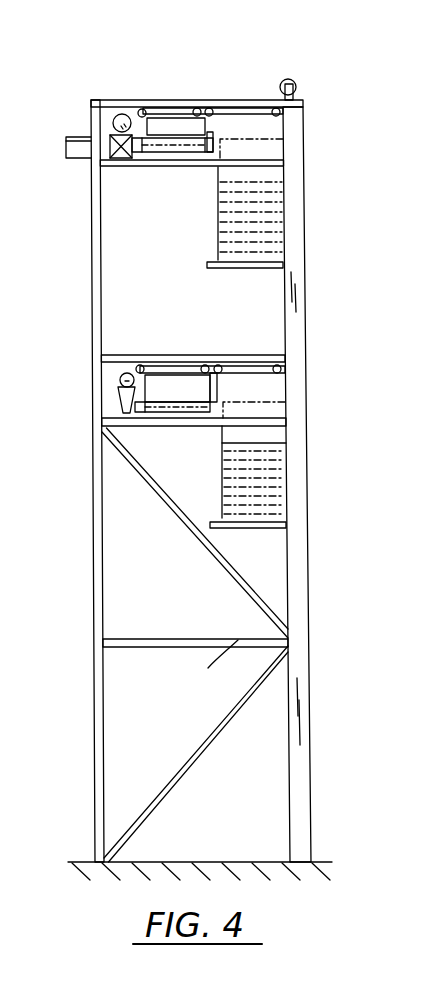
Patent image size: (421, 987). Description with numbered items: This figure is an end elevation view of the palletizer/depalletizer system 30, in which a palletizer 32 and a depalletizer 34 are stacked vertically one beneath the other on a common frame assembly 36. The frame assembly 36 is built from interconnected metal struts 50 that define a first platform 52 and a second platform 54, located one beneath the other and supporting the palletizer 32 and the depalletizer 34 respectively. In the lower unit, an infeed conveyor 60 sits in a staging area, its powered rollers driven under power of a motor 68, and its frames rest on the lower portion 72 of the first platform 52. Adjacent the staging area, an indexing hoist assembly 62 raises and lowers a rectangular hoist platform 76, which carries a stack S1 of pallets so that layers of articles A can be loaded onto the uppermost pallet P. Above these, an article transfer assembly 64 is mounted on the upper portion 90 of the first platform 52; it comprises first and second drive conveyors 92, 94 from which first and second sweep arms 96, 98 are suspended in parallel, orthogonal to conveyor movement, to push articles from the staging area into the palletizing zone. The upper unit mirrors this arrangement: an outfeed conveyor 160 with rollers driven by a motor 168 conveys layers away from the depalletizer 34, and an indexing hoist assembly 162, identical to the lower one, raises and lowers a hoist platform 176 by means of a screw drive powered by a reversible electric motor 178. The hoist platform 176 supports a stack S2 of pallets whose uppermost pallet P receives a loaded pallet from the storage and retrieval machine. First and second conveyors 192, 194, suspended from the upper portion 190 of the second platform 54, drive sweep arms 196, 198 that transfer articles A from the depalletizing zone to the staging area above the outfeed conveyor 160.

The palletizer/depalletizer system 30 is at (387, 107).
The palletizer 32 is at (106, 402).
The depalletizer 34 is at (98, 125).
The frame assembly 36 is at (94, 721).
The metal struts 50 is at (250, 689).
The first platform 52 is at (213, 350).
The second platform 54 is at (201, 98).
The infeed conveyor 60 is at (186, 414).
The indexing hoist assembly 62 is at (256, 534).
The article transfer assembly 64 is at (265, 356).
The motor 68 is at (119, 380).
The lower portion of the first platform 72 is at (130, 427).
The hoist platform 76 is at (216, 528).
The upper portion of the first platform 90 is at (112, 354).
The first drive conveyor 92 is at (179, 363).
The second drive conveyor 94 is at (241, 358).
The first sweep arm 96 is at (141, 364).
The second sweep arm 98 is at (215, 395).
The outfeed conveyor 160 is at (168, 150).
The indexing hoist assembly 162 is at (253, 271).
The motor 168 is at (118, 119).
The hoist platform 176 is at (207, 265).
The reversible electric motor 178 is at (297, 83).
The upper portion of the second support platform 190 is at (152, 103).
The first conveyor 192 is at (146, 112).
The second conveyor 194 is at (263, 112).
The sweep arm 196 is at (132, 134).
The sweep arm 198 is at (206, 125).
The articles A is at (170, 122).
The pallet P is at (273, 223).
The stack of pallets S1 is at (270, 518).
The stack of pallets S2 is at (270, 262).